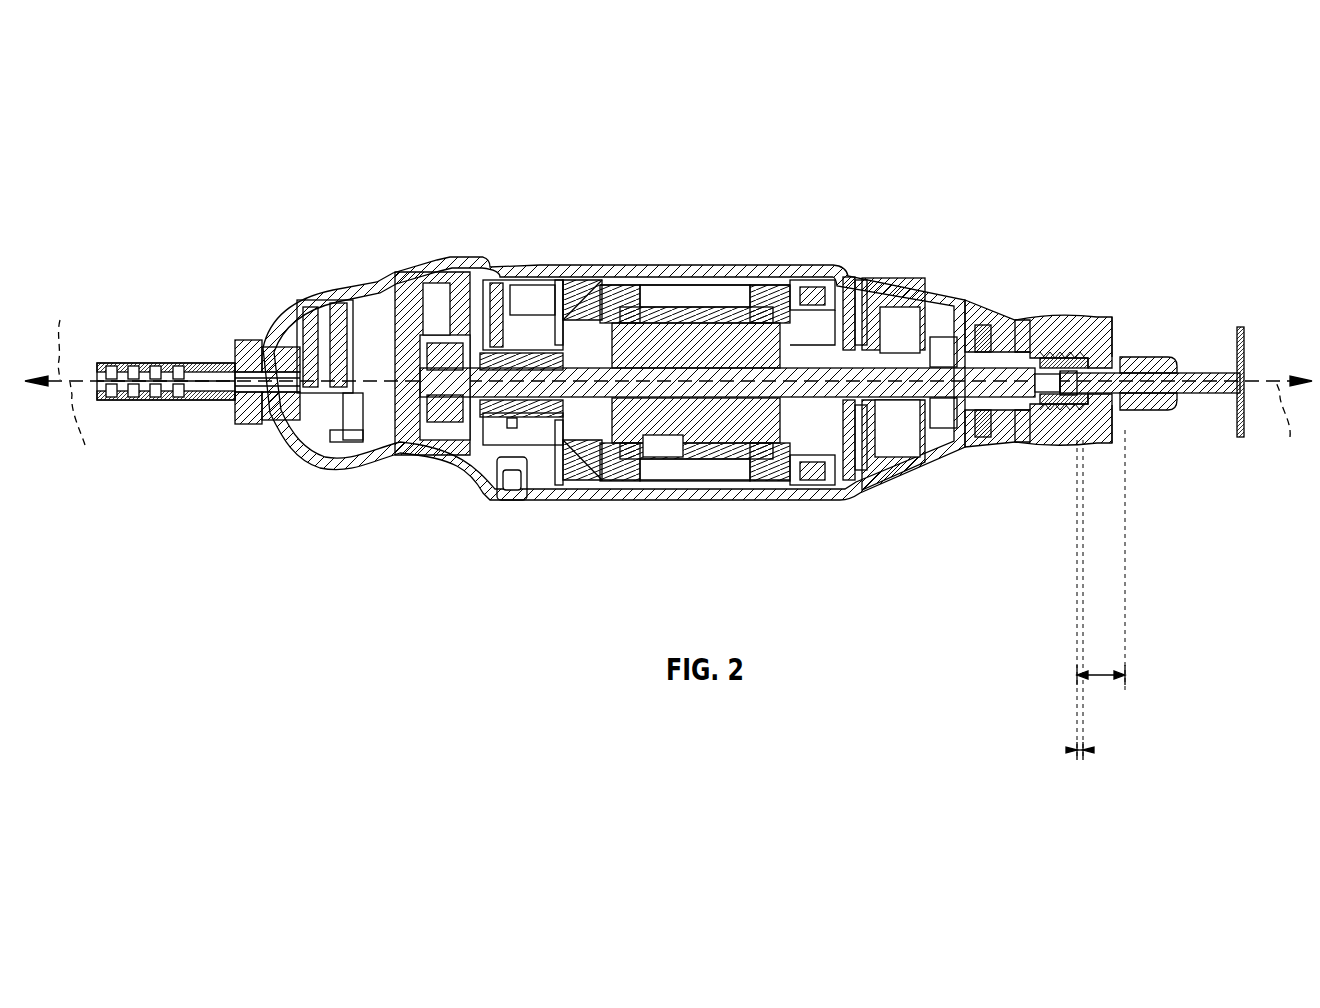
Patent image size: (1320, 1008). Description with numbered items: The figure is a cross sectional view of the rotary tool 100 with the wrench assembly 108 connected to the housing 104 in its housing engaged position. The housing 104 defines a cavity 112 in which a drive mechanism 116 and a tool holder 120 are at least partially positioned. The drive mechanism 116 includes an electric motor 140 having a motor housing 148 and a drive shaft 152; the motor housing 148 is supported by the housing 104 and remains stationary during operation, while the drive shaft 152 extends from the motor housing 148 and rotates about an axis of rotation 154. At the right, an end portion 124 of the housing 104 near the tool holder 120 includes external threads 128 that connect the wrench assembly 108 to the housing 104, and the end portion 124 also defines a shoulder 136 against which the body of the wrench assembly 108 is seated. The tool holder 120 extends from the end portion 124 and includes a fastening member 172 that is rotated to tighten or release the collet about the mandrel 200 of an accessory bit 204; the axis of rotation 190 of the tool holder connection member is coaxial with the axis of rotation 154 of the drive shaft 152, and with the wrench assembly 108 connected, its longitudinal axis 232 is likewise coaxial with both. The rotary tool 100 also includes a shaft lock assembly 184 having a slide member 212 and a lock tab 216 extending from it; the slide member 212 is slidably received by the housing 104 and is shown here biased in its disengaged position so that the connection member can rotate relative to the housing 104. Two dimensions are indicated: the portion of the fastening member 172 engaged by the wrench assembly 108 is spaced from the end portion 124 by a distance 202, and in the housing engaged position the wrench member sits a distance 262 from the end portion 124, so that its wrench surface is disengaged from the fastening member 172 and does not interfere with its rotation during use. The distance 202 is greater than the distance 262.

The rotary tool 100 is at (315, 195).
The housing 104 is at (303, 465).
The wrench assembly 108 is at (1078, 290).
The cavity 112 is at (825, 340).
The drive mechanism 116 is at (715, 300).
The tool holder 120 is at (1122, 416).
The end portion 124 is at (1000, 376).
The external threads 128 is at (1062, 433).
The shoulder 136 is at (1030, 428).
The electric motor 140 is at (690, 322).
The motor housing 148 is at (705, 452).
The drive shaft 152 is at (783, 458).
The axis of rotation 154 is at (67, 338).
The fastening member 172 is at (1162, 358).
The shaft lock assembly 184 is at (984, 330).
The axis of rotation 190 is at (150, 417).
The mandrel 200 is at (1188, 390).
The distance 202 is at (1103, 676).
The accessory bit 204 is at (1244, 353).
The slide member 212 is at (948, 332).
The lock tab 216 is at (1022, 350).
The longitudinal axis 232 is at (1291, 421).
The distance 262 is at (1078, 755).